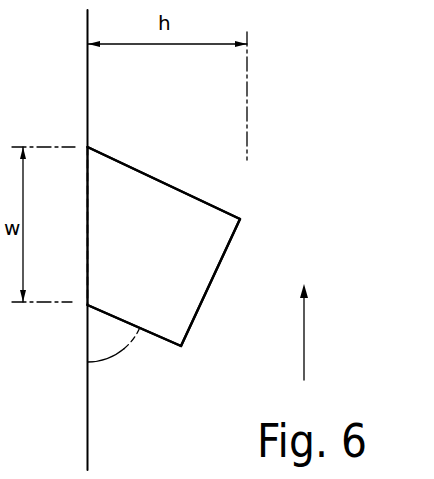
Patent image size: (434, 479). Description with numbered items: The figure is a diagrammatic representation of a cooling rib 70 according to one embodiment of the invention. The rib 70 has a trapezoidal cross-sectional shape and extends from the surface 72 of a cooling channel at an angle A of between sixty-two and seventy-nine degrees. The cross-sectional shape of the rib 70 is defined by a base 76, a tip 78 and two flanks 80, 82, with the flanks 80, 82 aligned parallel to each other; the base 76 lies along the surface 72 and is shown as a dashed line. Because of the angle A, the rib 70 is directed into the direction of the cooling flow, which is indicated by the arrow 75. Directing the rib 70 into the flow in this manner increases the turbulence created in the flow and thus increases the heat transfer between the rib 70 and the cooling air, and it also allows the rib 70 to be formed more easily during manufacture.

The rib 70 is at (212, 236).
The surface 72 is at (88, 437).
The arrow 75 is at (304, 341).
The base 76 is at (85, 250).
The tip 78 is at (217, 277).
The flank 80 is at (150, 336).
The flank 82 is at (150, 174).
The angle A is at (107, 340).